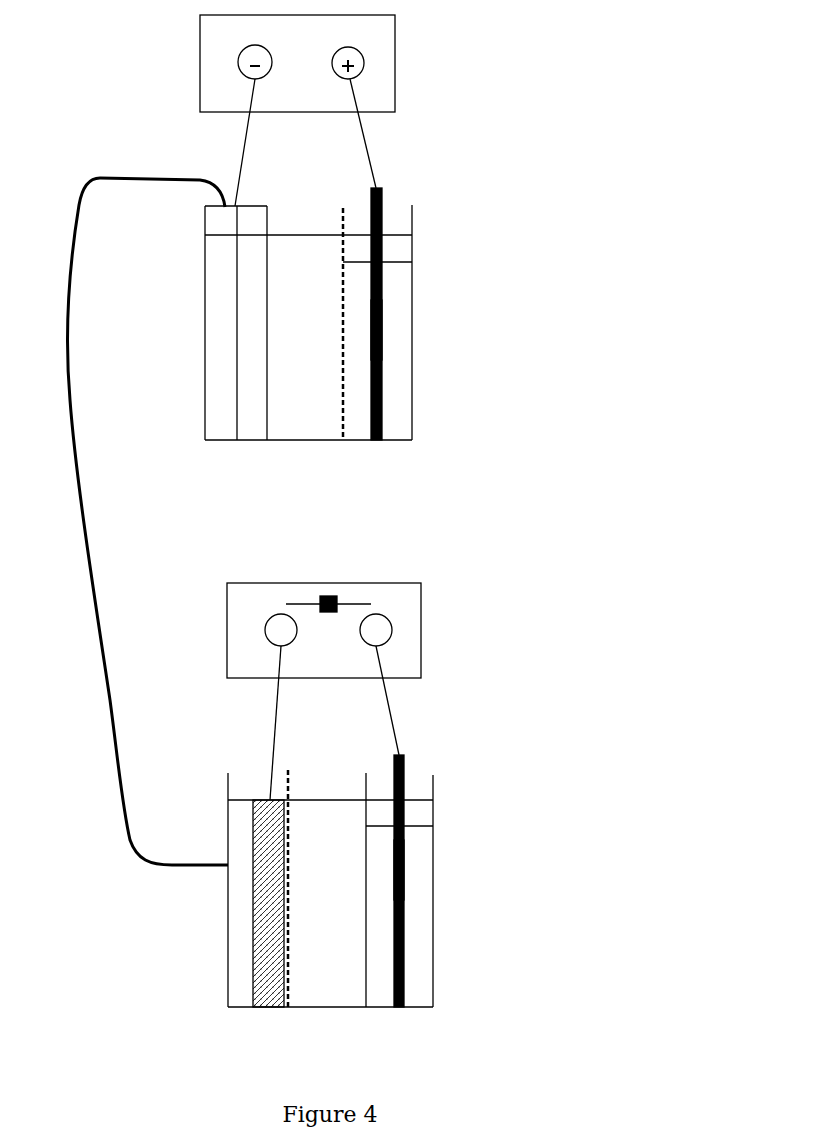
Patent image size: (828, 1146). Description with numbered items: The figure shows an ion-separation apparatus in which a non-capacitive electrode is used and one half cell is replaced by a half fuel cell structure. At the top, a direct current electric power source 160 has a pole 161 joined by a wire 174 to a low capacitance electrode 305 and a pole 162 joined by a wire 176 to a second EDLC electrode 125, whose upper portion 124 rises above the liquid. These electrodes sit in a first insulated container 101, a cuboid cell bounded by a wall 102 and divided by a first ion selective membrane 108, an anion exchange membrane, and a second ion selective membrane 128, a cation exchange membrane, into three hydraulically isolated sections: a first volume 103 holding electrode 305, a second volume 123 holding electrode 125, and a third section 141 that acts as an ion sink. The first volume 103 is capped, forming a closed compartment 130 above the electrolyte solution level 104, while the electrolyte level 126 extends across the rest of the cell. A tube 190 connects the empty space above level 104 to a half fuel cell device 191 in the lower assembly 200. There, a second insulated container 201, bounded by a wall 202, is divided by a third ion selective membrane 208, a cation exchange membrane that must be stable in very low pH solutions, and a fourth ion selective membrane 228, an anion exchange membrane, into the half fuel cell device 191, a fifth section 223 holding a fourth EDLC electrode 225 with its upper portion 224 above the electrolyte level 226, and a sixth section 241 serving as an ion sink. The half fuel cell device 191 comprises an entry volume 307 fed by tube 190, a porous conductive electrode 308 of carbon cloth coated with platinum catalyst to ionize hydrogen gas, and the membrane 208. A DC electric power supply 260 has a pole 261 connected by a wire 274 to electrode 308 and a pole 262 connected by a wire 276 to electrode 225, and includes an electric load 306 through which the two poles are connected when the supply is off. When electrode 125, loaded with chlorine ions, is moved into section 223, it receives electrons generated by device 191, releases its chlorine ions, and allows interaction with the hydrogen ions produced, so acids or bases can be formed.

The direct current electric power source 160 is at (197, 31).
The pole 161 is at (240, 73).
The pole 162 is at (365, 65).
The wire 174 is at (243, 125).
The second lead wire 176 is at (362, 123).
The compartment 130 is at (247, 205).
The electrolyte level 126 is at (307, 235).
The anode electrode 124 is at (398, 234).
The second EDLC electrode 125 is at (385, 313).
The electrolyte solution level 104 is at (215, 233).
The first ion selective membrane 108 is at (267, 253).
The second ion selective membrane 128 is at (412, 262).
The low capacitance electrode 305 is at (232, 325).
The first hydraulically isolated volume 103 is at (215, 373).
The second hydraulically isolated volume 123 is at (395, 390).
The cell right wall 102 is at (415, 438).
The first insulated container 101 is at (293, 443).
The third hydraulically isolated section 141 is at (308, 423).
The second electrolytic cell system 200 is at (155, 492).
The tube 190 is at (103, 648).
The DC electric power supply 260 is at (352, 583).
The pole 261 is at (258, 628).
The pole 262 is at (395, 628).
The electric load 306 is at (300, 602).
The wire 274 is at (268, 693).
The lead wire 276 is at (385, 695).
The electrolyte level 226 is at (317, 797).
The anode electrode 224 is at (405, 800).
The fourth EDLC electrode 225 is at (405, 860).
The third ion selective membrane 208 is at (252, 821).
The fourth ion selective membrane 228 is at (433, 826).
The half fuel cell device 191 is at (228, 905).
The entry volume 307 is at (232, 933).
The porous conductive electrode 308 is at (253, 980).
The fifth hydraulically isolated section 223 is at (415, 932).
The cell right wall 202 is at (438, 978).
The sixth hydraulically isolated section 241 is at (332, 977).
The second insulated container 201 is at (310, 1013).